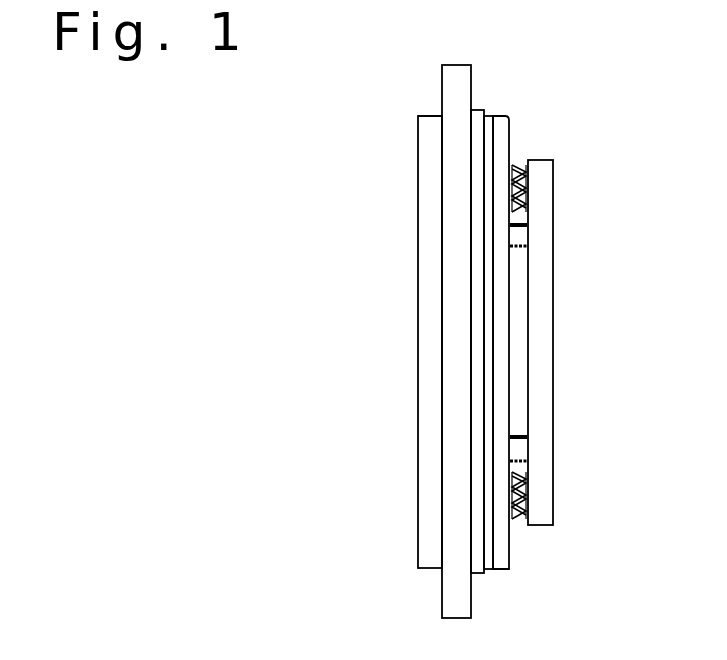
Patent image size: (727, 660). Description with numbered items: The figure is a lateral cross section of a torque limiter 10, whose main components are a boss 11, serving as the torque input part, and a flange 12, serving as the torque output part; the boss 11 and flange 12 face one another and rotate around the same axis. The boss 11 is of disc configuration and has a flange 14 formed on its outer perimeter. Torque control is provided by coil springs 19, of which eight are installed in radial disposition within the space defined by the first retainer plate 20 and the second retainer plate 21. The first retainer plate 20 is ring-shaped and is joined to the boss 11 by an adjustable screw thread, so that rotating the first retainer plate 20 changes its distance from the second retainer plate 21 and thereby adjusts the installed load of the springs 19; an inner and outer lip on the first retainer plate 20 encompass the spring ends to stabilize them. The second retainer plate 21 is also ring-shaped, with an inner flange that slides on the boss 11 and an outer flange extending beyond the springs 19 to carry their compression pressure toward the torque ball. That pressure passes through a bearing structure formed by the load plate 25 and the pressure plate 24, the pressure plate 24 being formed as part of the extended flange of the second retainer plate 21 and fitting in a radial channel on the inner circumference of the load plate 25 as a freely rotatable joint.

The torque limiter 10 is at (565, 148).
The boss 11 is at (418, 178).
The flange 12 is at (471, 68).
The flange 14 is at (425, 116).
The coil spring 19 is at (523, 168).
The first retainer plate 20 is at (553, 310).
The second retainer plate 21 is at (510, 402).
The pressure plate 24 is at (488, 573).
The load plate 25 is at (500, 570).